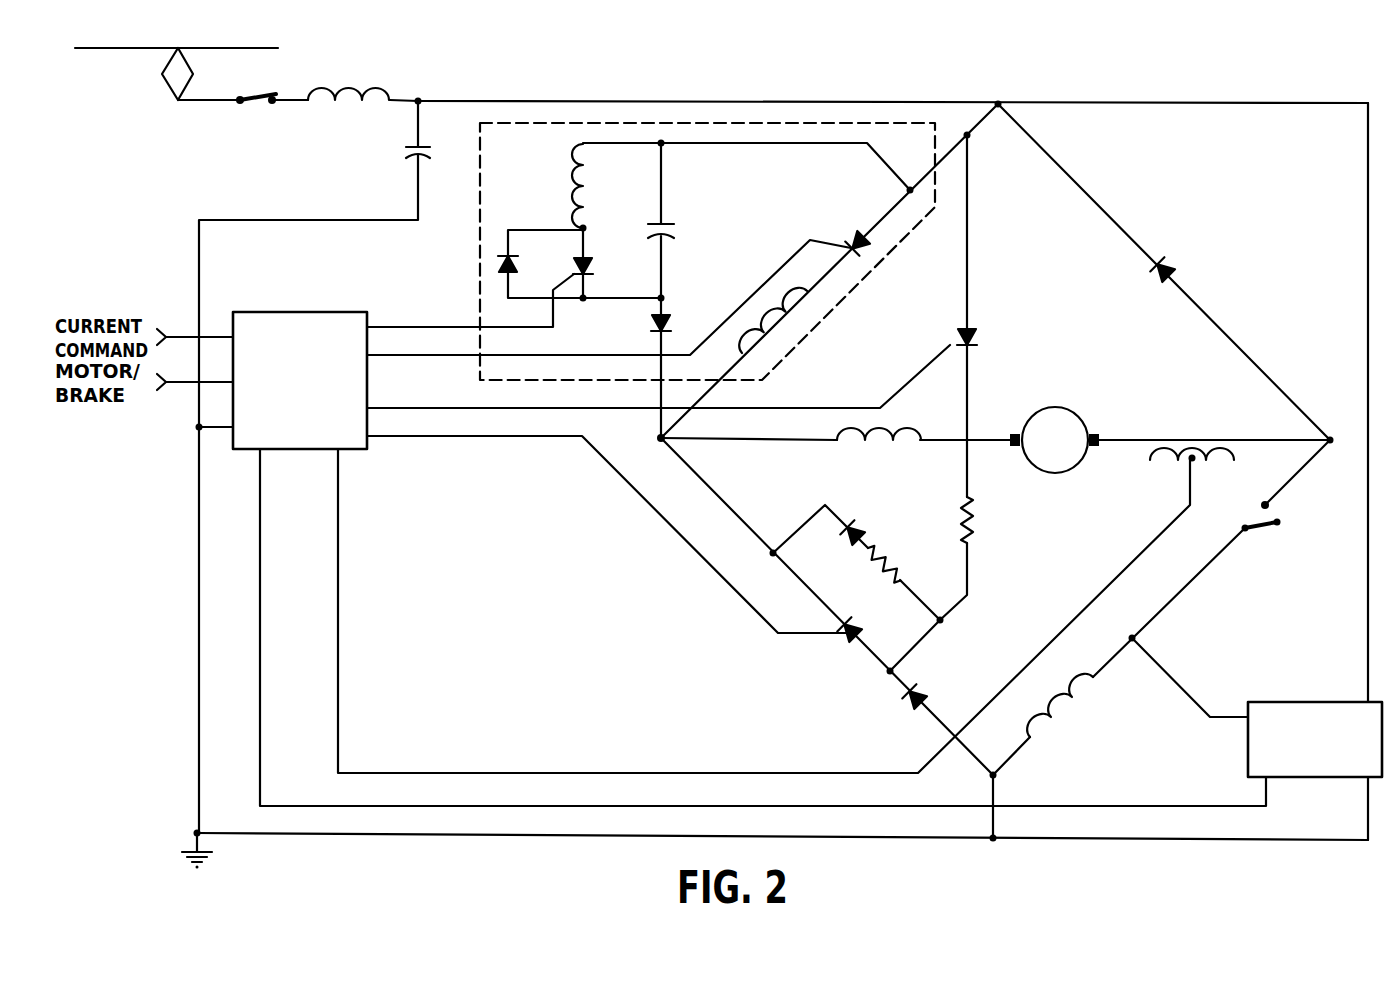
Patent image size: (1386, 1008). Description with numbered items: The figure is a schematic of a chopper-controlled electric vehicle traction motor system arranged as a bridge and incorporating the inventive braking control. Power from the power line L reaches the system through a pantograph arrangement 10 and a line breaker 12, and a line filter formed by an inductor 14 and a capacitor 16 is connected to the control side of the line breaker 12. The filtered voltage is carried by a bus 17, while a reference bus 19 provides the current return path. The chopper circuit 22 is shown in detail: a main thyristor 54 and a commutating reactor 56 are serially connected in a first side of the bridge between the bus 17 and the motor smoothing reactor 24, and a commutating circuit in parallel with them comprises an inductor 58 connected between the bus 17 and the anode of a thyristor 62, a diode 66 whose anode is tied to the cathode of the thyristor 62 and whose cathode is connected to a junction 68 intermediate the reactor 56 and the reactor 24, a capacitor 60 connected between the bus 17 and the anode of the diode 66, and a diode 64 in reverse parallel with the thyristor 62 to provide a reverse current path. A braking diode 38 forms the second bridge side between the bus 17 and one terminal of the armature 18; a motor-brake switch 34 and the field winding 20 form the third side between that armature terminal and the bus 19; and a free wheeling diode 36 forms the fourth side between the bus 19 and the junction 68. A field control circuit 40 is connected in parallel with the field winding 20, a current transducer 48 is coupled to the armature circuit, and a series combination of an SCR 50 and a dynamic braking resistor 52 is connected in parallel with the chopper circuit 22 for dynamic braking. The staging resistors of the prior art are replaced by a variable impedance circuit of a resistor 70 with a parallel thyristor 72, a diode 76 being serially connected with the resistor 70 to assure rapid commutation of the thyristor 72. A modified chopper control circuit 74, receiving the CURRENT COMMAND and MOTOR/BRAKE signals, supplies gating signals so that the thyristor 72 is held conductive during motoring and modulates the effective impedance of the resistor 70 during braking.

The power line L is at (229, 48).
The pantograph arrangement 10 is at (165, 85).
The line breaker 12 is at (262, 96).
The inductor 14 is at (372, 86).
The capacitor 16 is at (406, 148).
The bus 17 is at (763, 102).
The armature 18 is at (1078, 414).
The reference bus 19 is at (512, 836).
The field winding 20 is at (1082, 700).
The chopper circuit 22 is at (479, 248).
The smoothing reactor 24 is at (904, 442).
The motor-brake switch 34 is at (1282, 520).
The free-wheeling diode 36 is at (949, 680).
The braking diode 38 is at (1172, 267).
The field control circuit 40 is at (1307, 702).
The current transducer 48 is at (1168, 466).
The SCR 50 is at (986, 335).
The dynamic braking resistor 52 is at (982, 512).
The main thyristor 54 is at (854, 236).
The commutating reactor 56 is at (786, 338).
The inductor 58 is at (588, 182).
The capacitor 60 is at (678, 230).
The thyristor 62 is at (596, 264).
The diode 64 is at (514, 258).
The diode 66 is at (672, 325).
The junction 68 is at (658, 438).
The resistor 70 is at (898, 565).
The thyristor 72 is at (854, 646).
The modified chopper control circuit 74 is at (333, 312).
The diode 76 is at (864, 528).